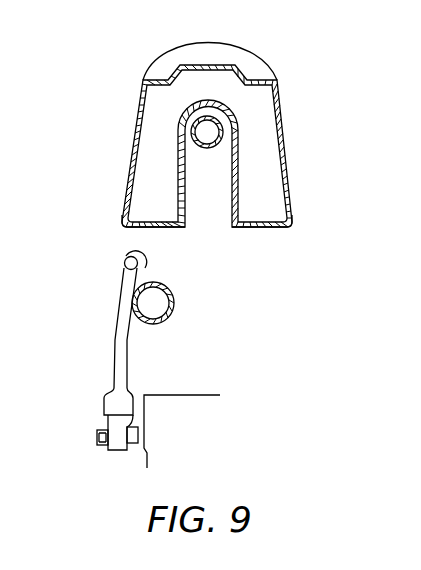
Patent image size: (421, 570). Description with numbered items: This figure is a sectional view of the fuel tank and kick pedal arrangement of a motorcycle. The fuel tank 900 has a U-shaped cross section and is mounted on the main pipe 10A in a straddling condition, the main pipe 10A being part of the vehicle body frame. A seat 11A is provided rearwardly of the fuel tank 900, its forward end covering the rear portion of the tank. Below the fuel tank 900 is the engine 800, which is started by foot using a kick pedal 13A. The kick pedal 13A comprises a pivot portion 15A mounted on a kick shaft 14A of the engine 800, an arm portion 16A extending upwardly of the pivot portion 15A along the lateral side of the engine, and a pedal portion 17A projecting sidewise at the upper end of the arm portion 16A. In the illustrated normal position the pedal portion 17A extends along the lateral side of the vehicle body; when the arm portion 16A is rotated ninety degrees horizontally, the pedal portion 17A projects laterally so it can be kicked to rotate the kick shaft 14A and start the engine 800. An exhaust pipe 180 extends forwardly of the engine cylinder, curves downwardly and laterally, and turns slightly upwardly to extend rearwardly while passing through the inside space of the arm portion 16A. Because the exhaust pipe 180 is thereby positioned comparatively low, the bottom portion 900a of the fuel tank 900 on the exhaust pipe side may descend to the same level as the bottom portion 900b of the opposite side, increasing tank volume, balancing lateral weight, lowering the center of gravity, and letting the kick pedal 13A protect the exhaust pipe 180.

The fuel tank 900 is at (286, 117).
The bottom portion of the fuel tank 900a is at (140, 226).
The bottom portion of the opposite side 900b is at (270, 227).
The seat 11A is at (250, 50).
The main pipe 10A is at (202, 149).
The pedal portion 17A is at (123, 258).
The exhaust pipe 180 is at (174, 313).
The kick pedal 13A is at (95, 333).
The arm portion 16A is at (117, 358).
The pivot portion 15A is at (108, 423).
The kick shaft 14A is at (130, 443).
The engine 800 is at (185, 395).